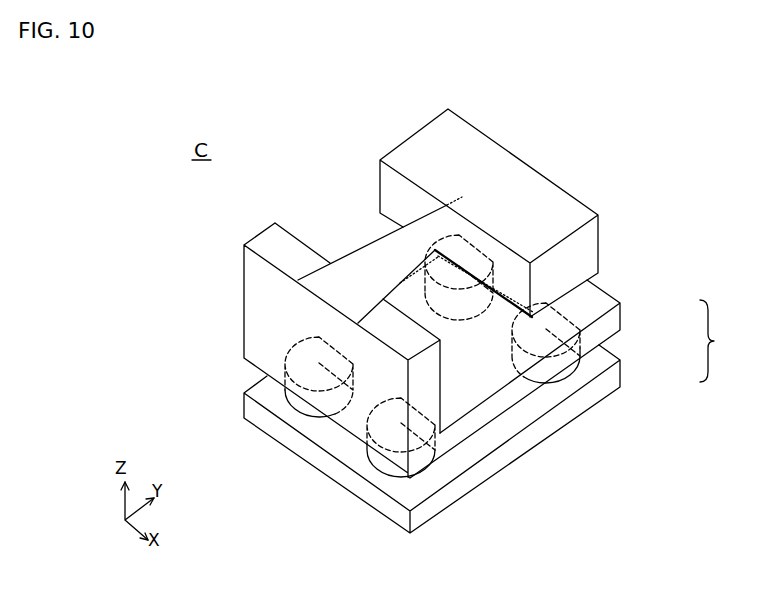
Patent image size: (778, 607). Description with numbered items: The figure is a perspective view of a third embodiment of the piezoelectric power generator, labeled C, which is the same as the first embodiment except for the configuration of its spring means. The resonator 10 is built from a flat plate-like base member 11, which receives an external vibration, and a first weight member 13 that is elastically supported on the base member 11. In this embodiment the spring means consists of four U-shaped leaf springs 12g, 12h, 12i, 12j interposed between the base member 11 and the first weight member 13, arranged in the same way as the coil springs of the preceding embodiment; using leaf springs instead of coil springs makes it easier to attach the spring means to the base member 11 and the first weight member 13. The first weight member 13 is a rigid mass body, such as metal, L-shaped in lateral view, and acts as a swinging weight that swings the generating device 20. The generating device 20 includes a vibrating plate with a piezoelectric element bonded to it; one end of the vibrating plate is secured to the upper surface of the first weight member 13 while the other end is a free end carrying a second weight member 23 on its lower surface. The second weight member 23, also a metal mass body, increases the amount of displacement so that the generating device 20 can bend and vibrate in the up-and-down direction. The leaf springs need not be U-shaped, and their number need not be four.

The resonator 10 is at (729, 341).
The base member 11 is at (620, 374).
The first weight member 13 is at (618, 317).
The generating device 20 is at (354, 247).
The second weight member 23 is at (592, 240).
The U-shaped leaf spring 12g is at (372, 458).
The U-shaped leaf spring 12h is at (282, 417).
The U-shaped leaf spring 12i is at (566, 384).
The U-shaped leaf spring 12j is at (486, 262).